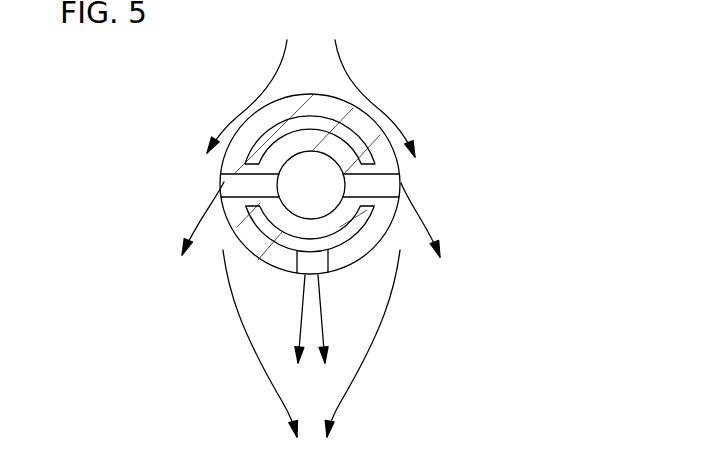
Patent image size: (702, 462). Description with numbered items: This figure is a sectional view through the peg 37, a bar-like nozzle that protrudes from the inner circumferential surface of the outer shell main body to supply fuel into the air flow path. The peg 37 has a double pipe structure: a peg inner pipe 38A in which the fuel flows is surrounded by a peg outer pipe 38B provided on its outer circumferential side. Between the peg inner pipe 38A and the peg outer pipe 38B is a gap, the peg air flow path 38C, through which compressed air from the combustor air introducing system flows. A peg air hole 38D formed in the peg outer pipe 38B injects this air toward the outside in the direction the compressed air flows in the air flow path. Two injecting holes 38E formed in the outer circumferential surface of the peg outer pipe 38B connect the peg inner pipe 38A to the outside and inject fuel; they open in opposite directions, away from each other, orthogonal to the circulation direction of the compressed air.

The peg 37 is at (475, 110).
The peg inner pipe 38A is at (277, 222).
The peg outer pipe 38B is at (262, 125).
The peg air flow path 38C is at (345, 132).
The peg air hole 38D is at (325, 268).
The injecting holes 38E is at (222, 182).